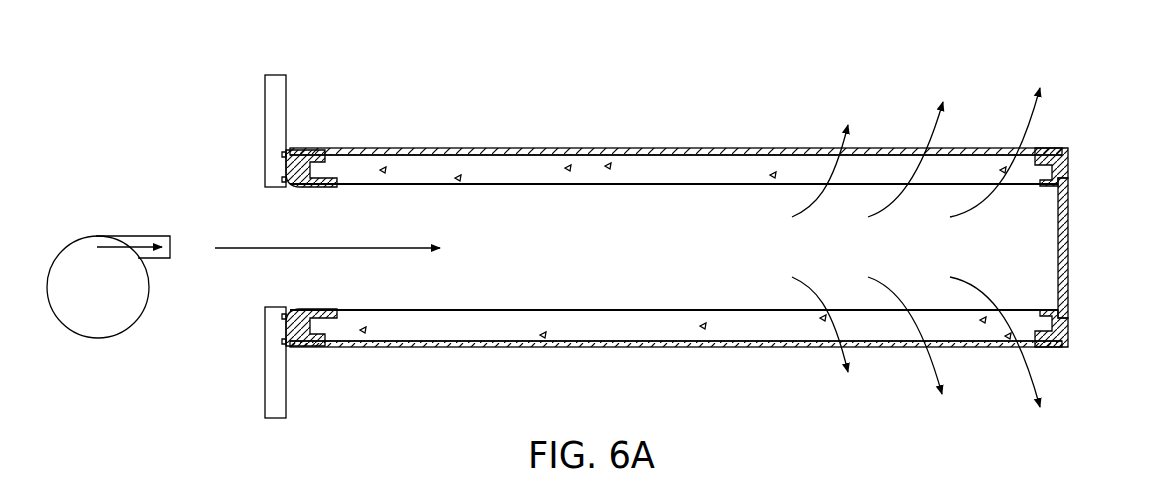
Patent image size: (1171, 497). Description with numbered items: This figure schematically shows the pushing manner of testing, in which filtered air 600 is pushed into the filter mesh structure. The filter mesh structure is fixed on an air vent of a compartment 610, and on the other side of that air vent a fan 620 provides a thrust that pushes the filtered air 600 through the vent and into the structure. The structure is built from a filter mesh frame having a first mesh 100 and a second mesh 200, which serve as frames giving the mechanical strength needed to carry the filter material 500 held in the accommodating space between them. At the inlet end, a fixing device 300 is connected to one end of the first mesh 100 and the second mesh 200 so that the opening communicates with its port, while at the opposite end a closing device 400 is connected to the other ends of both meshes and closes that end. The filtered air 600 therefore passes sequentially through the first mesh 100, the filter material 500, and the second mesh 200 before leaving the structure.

The first mesh 100 is at (447, 183).
The second mesh 200 is at (560, 150).
The fixing device 300 is at (285, 157).
The closing device 400 is at (1053, 148).
The filter material 500 is at (662, 168).
The filtered air 600 is at (327, 233).
The compartment 610 is at (273, 87).
The fan 620 is at (112, 315).